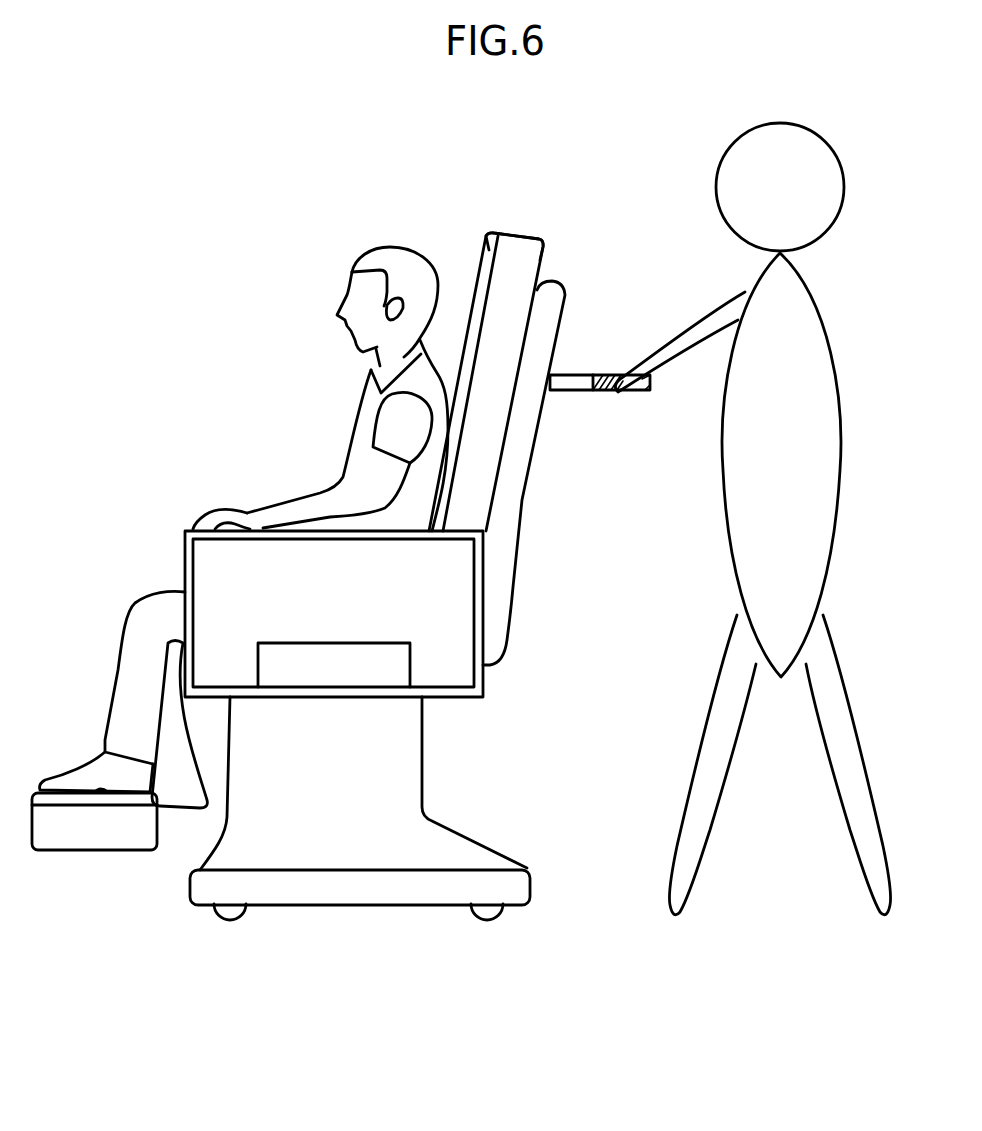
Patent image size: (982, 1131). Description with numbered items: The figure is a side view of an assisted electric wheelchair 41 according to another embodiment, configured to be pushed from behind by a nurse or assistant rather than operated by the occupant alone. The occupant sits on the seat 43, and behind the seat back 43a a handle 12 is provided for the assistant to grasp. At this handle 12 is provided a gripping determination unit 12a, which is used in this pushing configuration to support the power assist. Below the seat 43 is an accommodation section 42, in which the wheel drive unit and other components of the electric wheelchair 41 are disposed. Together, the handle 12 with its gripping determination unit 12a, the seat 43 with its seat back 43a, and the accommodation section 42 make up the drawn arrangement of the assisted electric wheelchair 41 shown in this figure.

The handle 12 is at (612, 441).
The gripping determination unit 12a is at (577, 405).
The electric wheelchair 41 is at (497, 707).
The accommodation section 42 is at (422, 788).
The seat 43 is at (520, 421).
The seat back 43a is at (520, 232).